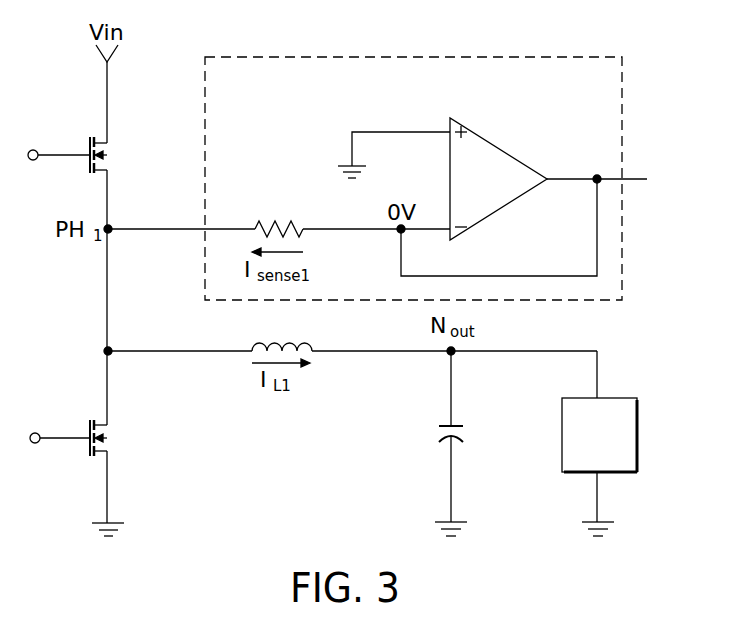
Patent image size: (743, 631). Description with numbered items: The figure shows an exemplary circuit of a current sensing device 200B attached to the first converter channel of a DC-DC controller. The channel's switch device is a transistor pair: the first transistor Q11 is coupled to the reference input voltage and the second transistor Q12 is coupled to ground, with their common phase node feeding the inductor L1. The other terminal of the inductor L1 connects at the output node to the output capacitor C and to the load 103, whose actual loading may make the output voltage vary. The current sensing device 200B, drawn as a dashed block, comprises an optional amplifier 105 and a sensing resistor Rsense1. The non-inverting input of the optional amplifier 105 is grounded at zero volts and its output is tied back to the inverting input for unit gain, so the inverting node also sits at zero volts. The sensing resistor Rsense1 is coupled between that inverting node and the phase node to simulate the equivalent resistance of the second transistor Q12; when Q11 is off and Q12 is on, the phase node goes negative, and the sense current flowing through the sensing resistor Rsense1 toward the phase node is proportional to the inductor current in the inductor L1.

The load 103 is at (640, 438).
The optional amplifier 105 is at (500, 147).
The current sensing device 200B is at (625, 105).
The first transistor Q11 is at (112, 152).
The second transistor Q12 is at (112, 433).
The sensing resistor Rsense1 is at (268, 220).
The inductor L1 is at (258, 342).
The output capacitor C is at (468, 434).